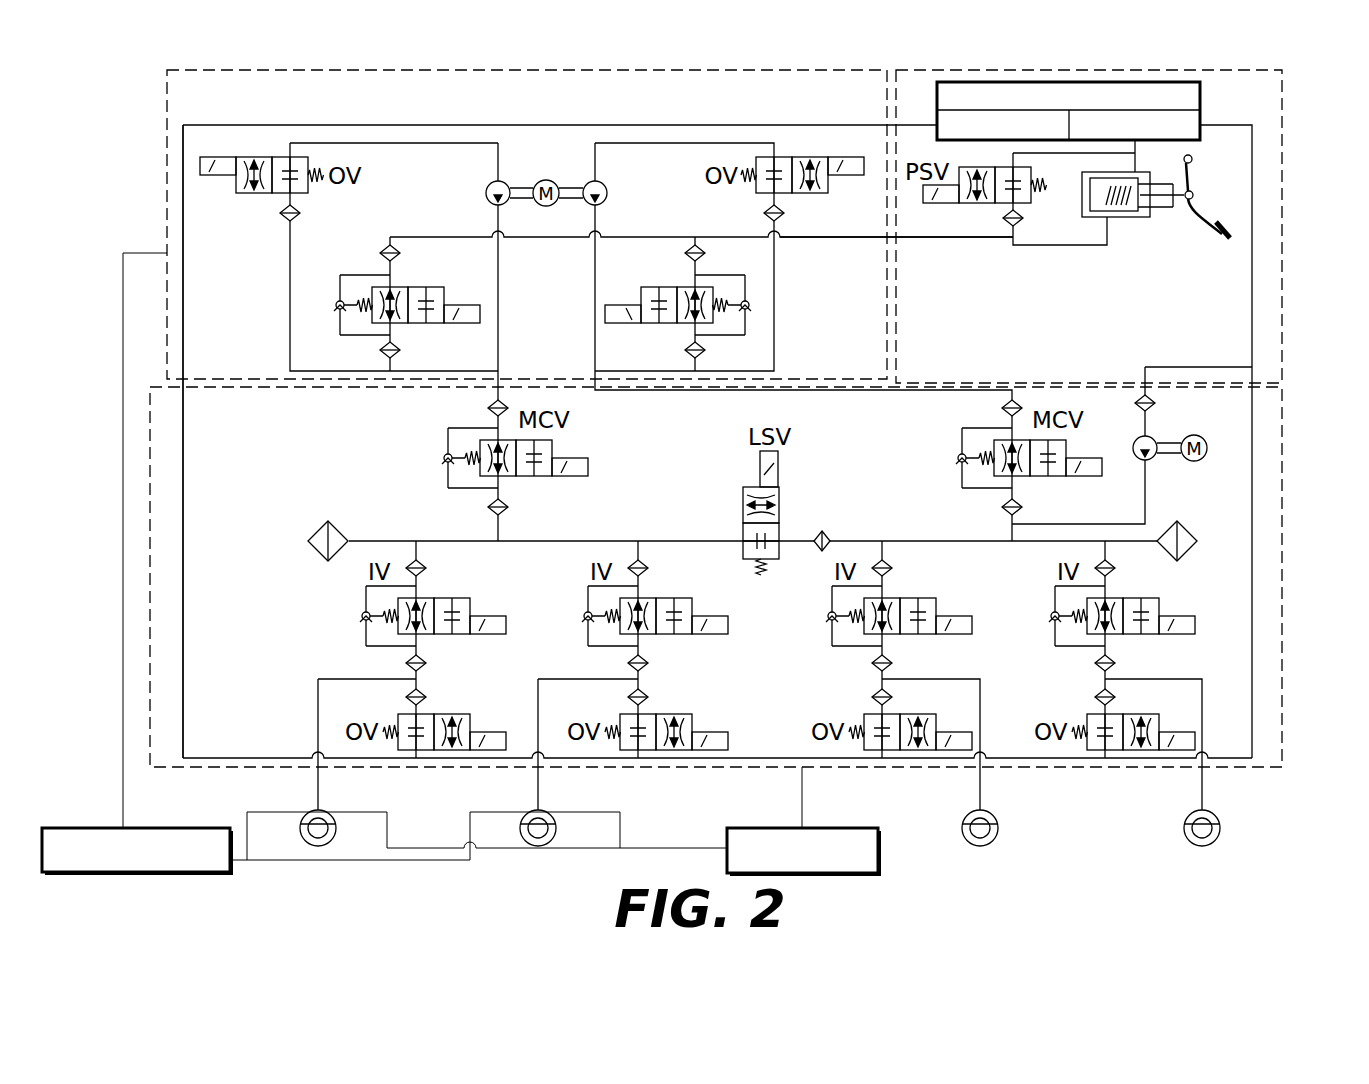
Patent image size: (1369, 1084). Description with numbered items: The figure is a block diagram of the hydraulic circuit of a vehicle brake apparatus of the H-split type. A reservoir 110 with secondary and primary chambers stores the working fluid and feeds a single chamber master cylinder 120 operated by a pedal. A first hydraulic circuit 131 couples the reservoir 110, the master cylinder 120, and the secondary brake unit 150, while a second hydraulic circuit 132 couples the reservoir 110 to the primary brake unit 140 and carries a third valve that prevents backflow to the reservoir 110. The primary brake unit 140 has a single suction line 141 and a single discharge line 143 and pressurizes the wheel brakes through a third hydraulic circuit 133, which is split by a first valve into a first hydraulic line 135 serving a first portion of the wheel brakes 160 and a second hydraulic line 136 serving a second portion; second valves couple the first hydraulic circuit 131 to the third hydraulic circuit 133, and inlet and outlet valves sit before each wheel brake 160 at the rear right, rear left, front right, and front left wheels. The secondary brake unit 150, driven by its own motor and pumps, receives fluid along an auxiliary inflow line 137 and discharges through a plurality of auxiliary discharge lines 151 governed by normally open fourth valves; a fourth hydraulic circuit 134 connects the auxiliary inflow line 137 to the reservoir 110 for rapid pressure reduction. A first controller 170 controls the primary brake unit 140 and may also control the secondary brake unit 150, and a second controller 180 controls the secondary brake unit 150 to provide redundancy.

The reservoir 110 is at (1200, 103).
The master cylinder 120 is at (1131, 217).
The first hydraulic circuit 131 is at (948, 244).
The second hydraulic circuit 132 is at (1255, 252).
The third hydraulic circuit 133 is at (706, 535).
The fourth hydraulic circuit 134 is at (614, 127).
The first hydraulic line 135 is at (600, 541).
The second hydraulic line 136 is at (905, 541).
The auxiliary inflow line 137 is at (183, 425).
The primary brake unit 140 is at (1282, 420).
The suction line 141 is at (1136, 410).
The discharge line 143 is at (1147, 485).
The secondary brake unit 150 is at (167, 228).
The auxiliary discharge lines 151 is at (290, 337).
The wheel brake 160 is at (330, 812).
The first controller 170 is at (878, 858).
The second controller 180 is at (100, 827).